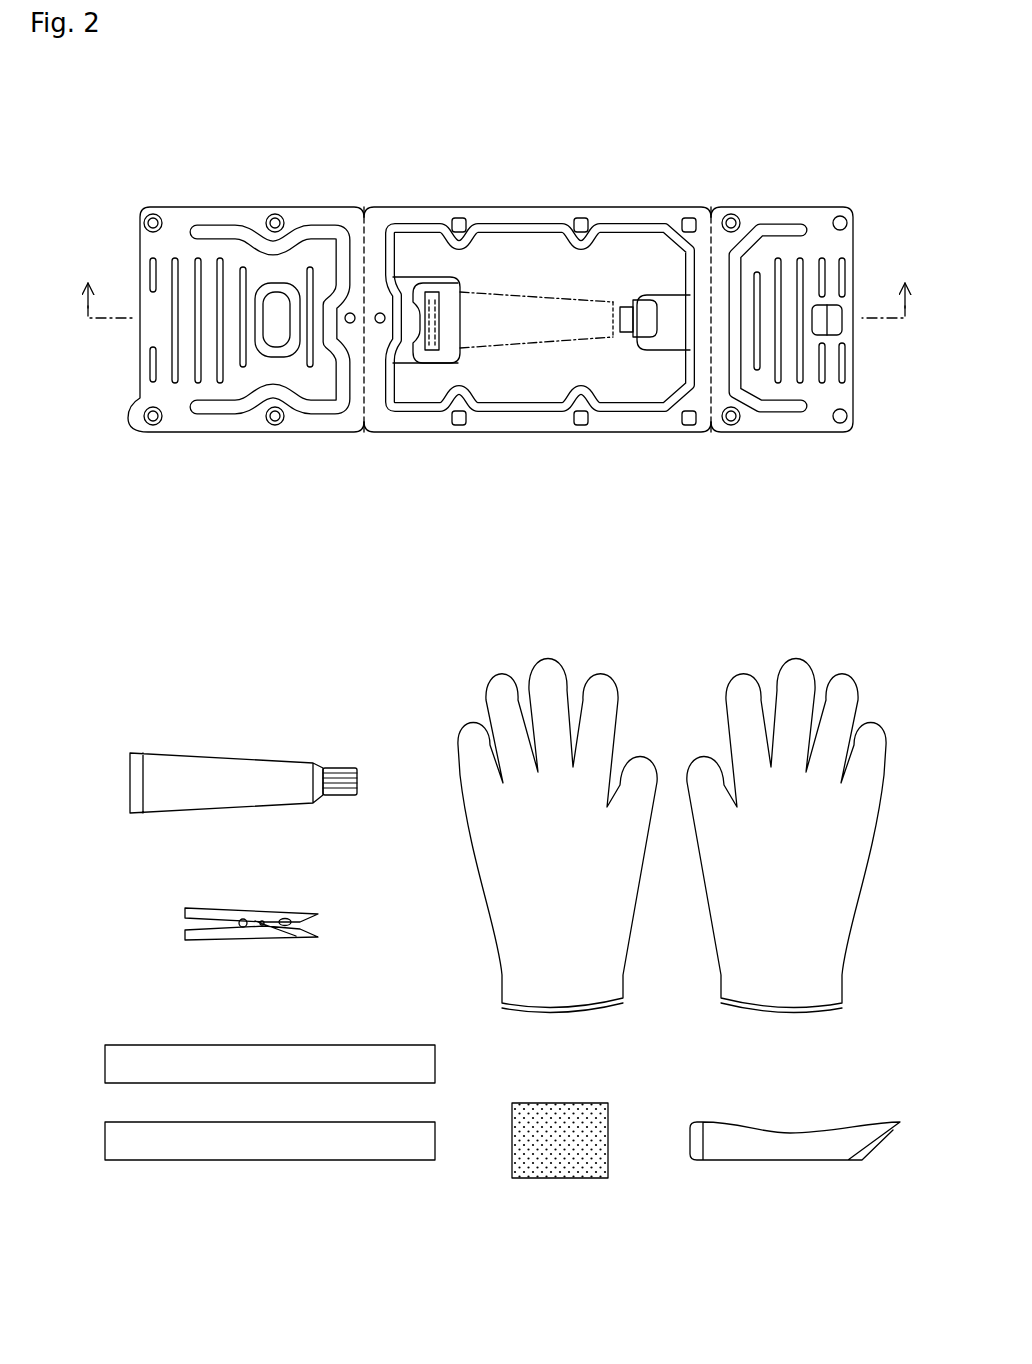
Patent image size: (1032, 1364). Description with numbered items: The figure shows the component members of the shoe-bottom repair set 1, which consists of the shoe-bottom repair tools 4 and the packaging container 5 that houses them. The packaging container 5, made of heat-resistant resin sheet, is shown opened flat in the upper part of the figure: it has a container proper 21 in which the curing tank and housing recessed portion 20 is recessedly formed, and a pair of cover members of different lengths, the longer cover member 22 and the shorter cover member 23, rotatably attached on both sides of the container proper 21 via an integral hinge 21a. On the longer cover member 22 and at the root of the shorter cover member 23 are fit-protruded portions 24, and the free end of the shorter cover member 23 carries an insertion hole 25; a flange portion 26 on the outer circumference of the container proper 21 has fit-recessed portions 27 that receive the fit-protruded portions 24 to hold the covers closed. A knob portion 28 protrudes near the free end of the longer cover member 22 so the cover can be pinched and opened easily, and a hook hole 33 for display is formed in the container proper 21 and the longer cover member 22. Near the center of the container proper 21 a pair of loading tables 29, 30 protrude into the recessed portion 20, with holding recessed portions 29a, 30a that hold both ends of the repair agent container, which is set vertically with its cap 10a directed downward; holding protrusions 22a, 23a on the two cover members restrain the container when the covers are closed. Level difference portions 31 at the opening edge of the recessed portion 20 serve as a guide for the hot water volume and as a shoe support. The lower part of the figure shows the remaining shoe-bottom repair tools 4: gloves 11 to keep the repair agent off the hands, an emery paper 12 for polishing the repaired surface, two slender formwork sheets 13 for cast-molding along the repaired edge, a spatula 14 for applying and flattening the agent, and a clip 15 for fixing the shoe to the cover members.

The shoe-bottom repair set 1 is at (504, 308).
The shoe-bottom repair tools 4 is at (508, 911).
The packaging container 5 is at (534, 184).
The cap 10a is at (340, 768).
The gloves 11 is at (834, 622).
The emery paper 12 is at (578, 1168).
The formwork sheet 13 is at (352, 1068).
The spatula 14 is at (735, 1150).
The clip 15 is at (313, 898).
The curing tank and housing recessed portion 20 is at (543, 275).
The container proper 21 is at (537, 315).
The integral hinge 21a is at (362, 207).
The longer cover member 22 is at (228, 310).
The holding protrusion 22a is at (268, 340).
The shorter cover member 23 is at (821, 308).
The holding protrusion 23a is at (835, 329).
The fit-protruded portion 24 is at (151, 214).
The insertion hole 25 is at (847, 222).
The flange portion 26 is at (618, 432).
The fit-recessed portion 27 is at (583, 216).
The knob portion 28 is at (126, 424).
The loading table 29 is at (459, 384).
The holding recessed portion 29a is at (460, 350).
The loading table 30 is at (624, 320).
The holding recessed portion 30a is at (628, 336).
The level difference portion 31 is at (413, 223).
The hook hole 33 is at (380, 325).